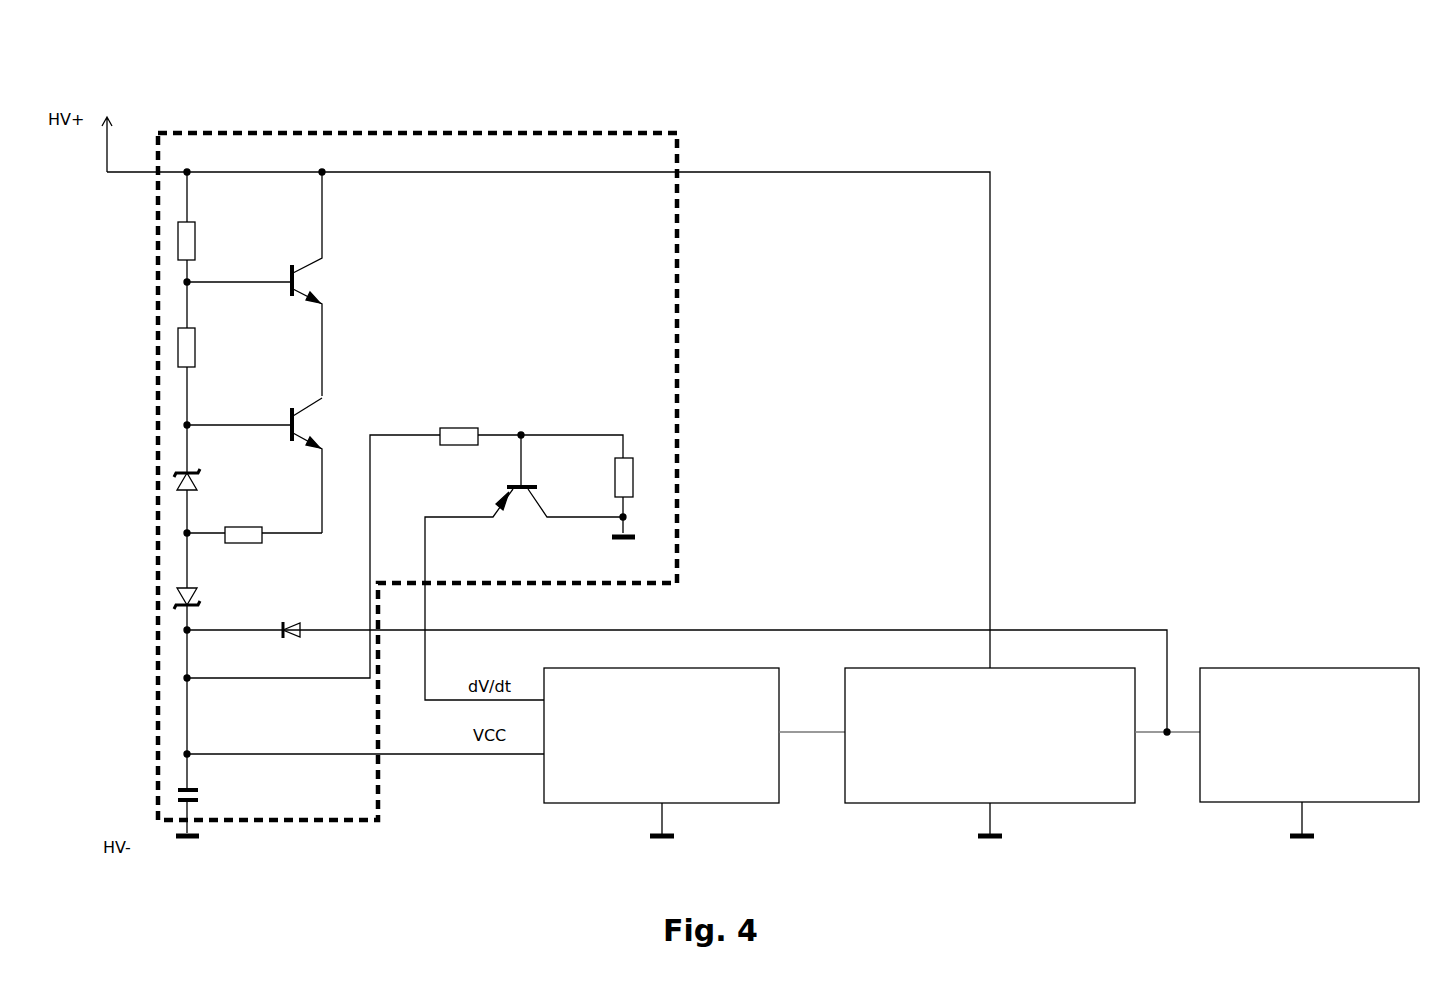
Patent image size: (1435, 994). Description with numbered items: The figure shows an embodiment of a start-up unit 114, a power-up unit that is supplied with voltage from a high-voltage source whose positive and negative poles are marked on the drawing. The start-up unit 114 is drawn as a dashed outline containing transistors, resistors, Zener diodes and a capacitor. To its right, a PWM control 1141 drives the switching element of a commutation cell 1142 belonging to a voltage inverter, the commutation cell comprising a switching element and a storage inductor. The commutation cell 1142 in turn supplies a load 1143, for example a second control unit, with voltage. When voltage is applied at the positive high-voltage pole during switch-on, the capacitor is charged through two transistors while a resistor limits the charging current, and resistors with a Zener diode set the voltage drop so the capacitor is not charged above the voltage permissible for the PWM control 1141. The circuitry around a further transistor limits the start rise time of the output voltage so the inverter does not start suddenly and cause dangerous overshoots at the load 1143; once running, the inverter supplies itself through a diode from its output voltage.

The start-up unit 114 is at (642, 132).
The PWM control 1141 is at (733, 803).
The commutation cell 1142 is at (1055, 803).
The load 1143 is at (1350, 668).